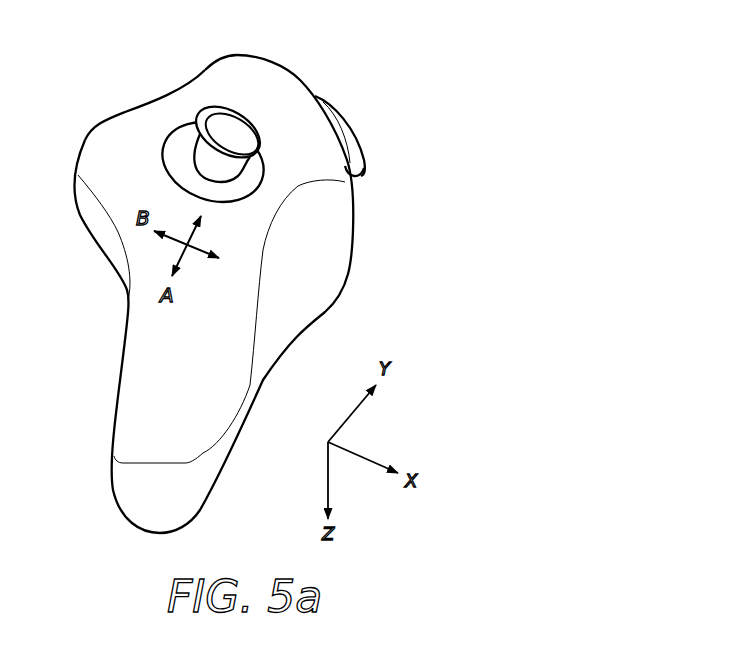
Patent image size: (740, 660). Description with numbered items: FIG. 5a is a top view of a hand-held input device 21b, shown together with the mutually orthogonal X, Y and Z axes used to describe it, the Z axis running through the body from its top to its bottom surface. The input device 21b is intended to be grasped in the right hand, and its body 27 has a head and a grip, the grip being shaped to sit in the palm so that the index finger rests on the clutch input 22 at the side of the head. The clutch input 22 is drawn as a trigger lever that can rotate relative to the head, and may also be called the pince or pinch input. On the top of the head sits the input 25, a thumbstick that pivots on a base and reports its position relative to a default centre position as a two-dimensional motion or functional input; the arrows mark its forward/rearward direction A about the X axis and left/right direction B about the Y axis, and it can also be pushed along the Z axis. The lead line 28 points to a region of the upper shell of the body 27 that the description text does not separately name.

The input device 21b is at (253, 63).
The clutch input 22 is at (347, 127).
The input 25 is at (266, 143).
The body 27 is at (130, 362).
The upper shell portion 28 is at (142, 112).